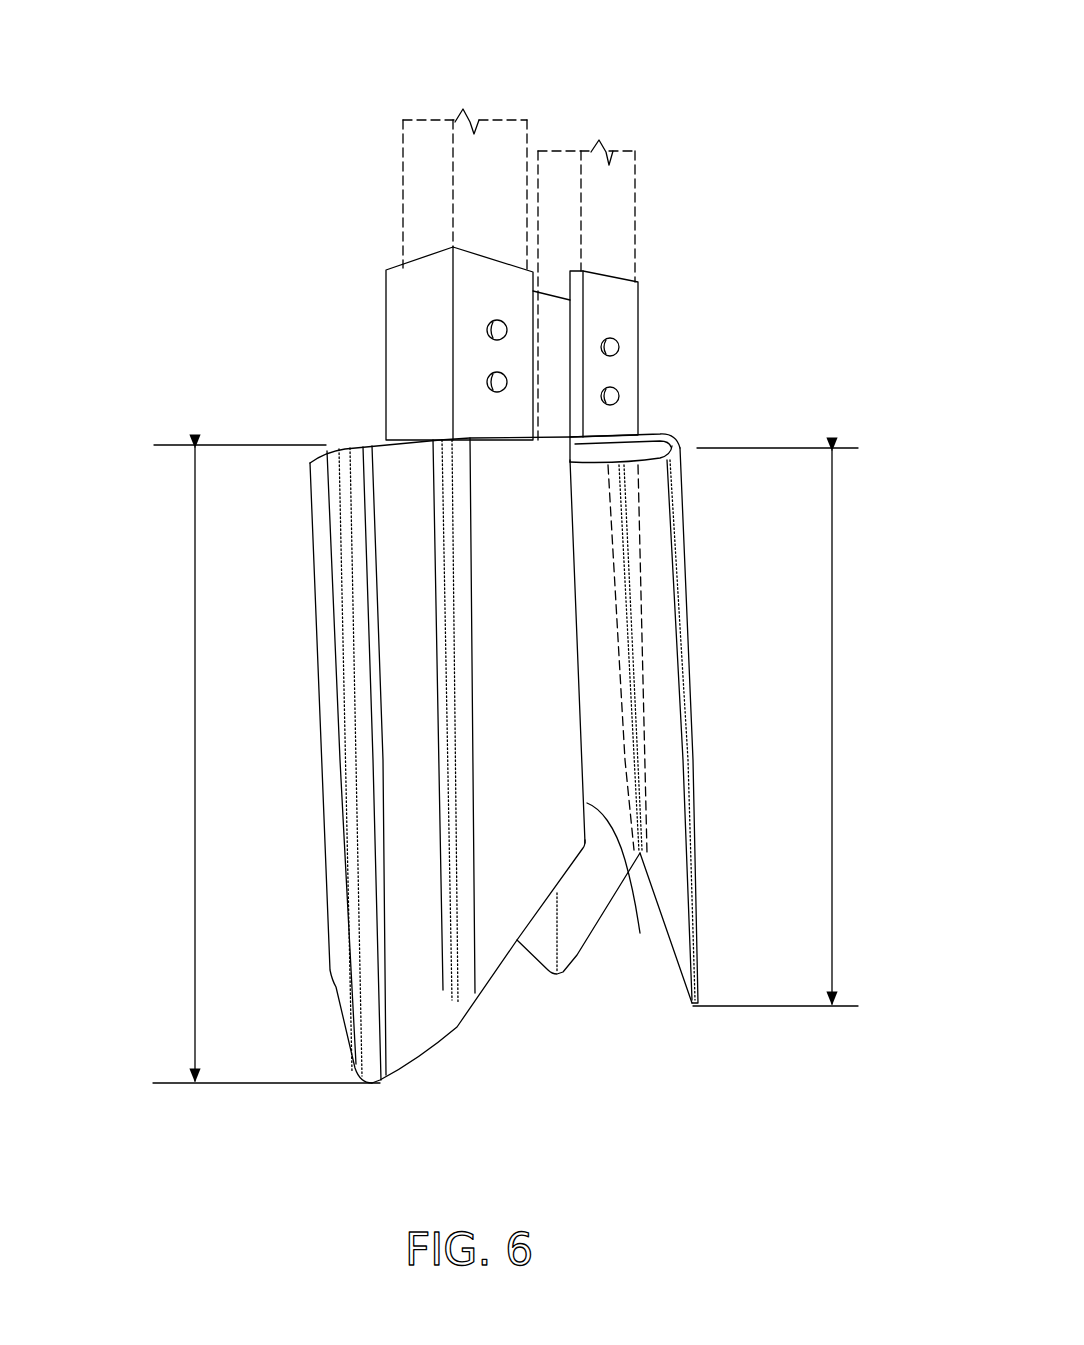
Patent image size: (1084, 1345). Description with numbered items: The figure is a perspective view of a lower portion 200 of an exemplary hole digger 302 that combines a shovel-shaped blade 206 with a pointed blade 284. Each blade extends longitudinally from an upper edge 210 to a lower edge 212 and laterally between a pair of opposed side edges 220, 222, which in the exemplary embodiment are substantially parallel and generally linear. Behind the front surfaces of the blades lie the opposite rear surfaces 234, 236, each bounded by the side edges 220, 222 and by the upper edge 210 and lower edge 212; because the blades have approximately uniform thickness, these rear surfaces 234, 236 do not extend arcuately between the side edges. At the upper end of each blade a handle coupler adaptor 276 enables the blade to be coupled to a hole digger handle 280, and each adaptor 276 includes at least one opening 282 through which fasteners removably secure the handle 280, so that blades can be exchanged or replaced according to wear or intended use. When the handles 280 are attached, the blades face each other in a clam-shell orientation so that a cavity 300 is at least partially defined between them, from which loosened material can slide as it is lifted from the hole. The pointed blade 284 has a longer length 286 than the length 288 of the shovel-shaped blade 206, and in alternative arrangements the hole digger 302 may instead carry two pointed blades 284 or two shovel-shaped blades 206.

The lower portion 200 is at (141, 344).
The shovel-shaped blade 206 is at (692, 728).
The upper edge 210 is at (385, 475).
The lower edge 212 is at (577, 957).
The side edge 220 is at (640, 936).
The side edge 222 is at (660, 678).
The rear surface 234 is at (335, 987).
The rear surface 236 is at (680, 593).
The handle coupler adaptor 276 is at (415, 345).
The hole digger handle 280 is at (640, 203).
The opening 282 is at (632, 384).
The pointed blade 284 is at (425, 978).
The length of pointed portion 286 is at (195, 787).
The length of shovel-shaped portion 288 is at (835, 728).
The cavity 300 is at (645, 541).
The hole digger 302 is at (150, 117).